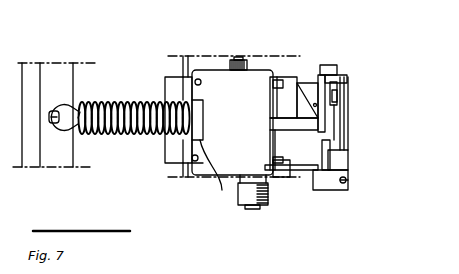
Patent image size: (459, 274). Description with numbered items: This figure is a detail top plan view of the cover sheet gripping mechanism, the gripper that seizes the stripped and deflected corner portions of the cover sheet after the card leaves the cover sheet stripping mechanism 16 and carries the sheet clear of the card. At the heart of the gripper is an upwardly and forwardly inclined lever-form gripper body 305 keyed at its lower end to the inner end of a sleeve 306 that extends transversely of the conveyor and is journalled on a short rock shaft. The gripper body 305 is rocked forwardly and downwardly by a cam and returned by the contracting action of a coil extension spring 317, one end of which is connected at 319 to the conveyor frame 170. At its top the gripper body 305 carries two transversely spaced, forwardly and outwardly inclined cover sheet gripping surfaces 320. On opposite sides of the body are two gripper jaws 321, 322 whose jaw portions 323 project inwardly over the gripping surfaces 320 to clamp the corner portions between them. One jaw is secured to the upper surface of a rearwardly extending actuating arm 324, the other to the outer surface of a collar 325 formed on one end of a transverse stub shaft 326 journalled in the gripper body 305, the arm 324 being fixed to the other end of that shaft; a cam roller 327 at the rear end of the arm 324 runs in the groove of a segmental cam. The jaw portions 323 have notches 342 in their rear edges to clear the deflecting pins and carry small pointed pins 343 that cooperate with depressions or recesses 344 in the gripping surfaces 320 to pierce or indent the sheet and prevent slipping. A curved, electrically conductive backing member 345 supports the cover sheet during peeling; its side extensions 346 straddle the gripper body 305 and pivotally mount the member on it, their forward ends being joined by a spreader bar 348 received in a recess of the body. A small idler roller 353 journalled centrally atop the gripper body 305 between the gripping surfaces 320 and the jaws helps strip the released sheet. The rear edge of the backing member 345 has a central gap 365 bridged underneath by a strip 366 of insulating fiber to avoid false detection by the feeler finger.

The cover sheet stripping mechanism 16 is at (317, 44).
The conveyor frame 170 is at (26, 158).
The gripper body 305 is at (172, 90).
The sleeve 306 is at (184, 61).
The coil extension spring 317 is at (102, 134).
The spring connection 319 is at (58, 107).
The cover sheet gripping surfaces 320 is at (313, 140).
The gripper jaw 321 is at (333, 182).
The gripper jaw 322 is at (347, 77).
The jaw portions 323 is at (331, 90).
The actuating arm 324 is at (297, 173).
The collar 325 is at (340, 92).
The transverse stub shaft 326 is at (335, 178).
The cam roller 327 is at (240, 200).
The notches 342 is at (347, 100).
The small pointed pins 343 is at (312, 172).
The depressions or recesses 344 is at (294, 83).
The backing member 345 is at (203, 163).
The side extensions 346 is at (283, 78).
The spreader bar 348 is at (342, 76).
The idler roller 353 is at (284, 113).
The gap 365 is at (202, 114).
The strip of insulating material 366 is at (222, 190).